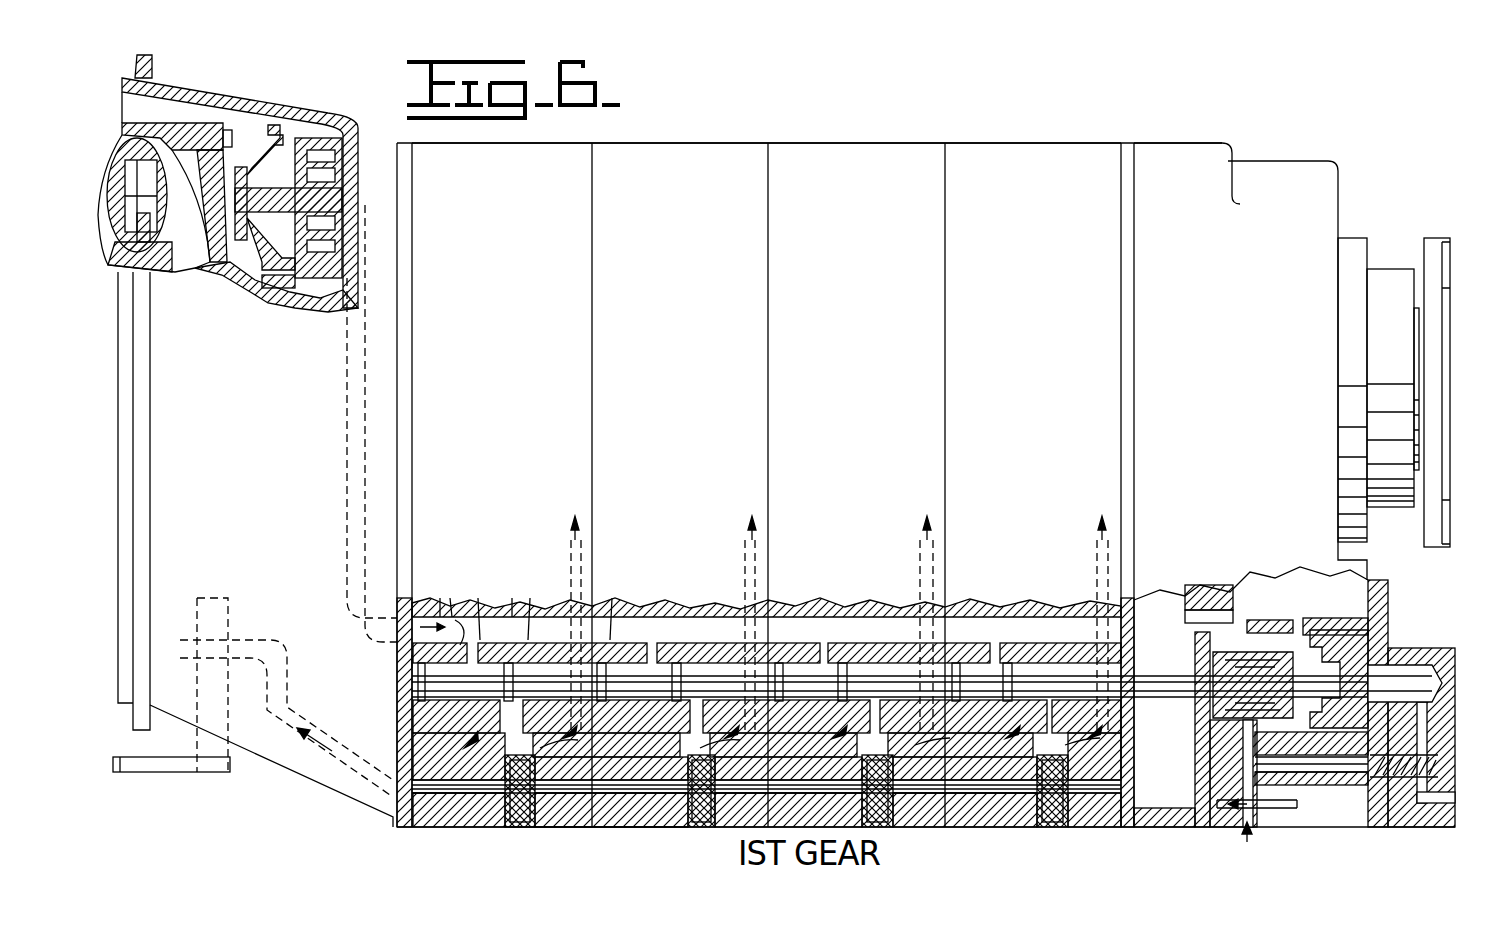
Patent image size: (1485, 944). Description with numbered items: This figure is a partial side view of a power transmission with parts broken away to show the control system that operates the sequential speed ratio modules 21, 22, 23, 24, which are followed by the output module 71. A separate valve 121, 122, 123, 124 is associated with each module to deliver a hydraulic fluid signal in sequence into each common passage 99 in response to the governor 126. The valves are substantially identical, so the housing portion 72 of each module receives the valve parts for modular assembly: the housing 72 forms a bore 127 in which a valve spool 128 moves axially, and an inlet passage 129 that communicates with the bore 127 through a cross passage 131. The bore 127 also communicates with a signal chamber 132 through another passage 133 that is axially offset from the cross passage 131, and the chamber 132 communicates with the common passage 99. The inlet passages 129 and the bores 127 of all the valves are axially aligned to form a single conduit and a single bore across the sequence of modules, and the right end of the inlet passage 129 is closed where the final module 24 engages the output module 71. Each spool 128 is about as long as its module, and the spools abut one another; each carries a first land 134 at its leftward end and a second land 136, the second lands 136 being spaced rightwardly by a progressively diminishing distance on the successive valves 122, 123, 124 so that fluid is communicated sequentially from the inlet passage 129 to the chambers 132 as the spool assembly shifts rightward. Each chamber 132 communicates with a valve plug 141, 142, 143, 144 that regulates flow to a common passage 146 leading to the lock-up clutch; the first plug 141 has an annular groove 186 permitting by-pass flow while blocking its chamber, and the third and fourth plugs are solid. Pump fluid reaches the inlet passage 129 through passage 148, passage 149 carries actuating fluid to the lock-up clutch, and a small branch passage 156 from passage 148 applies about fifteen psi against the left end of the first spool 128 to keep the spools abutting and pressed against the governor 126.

The speed ratio module 21 is at (508, 269).
The speed ratio module 22 is at (690, 269).
The speed ratio module 23 is at (862, 269).
The speed ratio module 24 is at (1038, 269).
The output module 71 is at (1228, 269).
The housing portion 72 is at (1088, 828).
The common passage 99 is at (1108, 550).
The valve 121 is at (459, 780).
The valve 122 is at (610, 780).
The valve 123 is at (786, 780).
The valve 124 is at (962, 780).
The governor 126 is at (1216, 814).
The bore 127 is at (512, 598).
The valve spool 128 is at (897, 592).
The inlet passage 129 is at (450, 598).
The cross passage 131 is at (998, 592).
The signal chamber 132 is at (1144, 736).
The passage 133 is at (1045, 592).
The first land 134 is at (412, 688).
The second land 136 is at (1018, 660).
The valve plug 141 is at (448, 830).
The valve plug 142 is at (700, 830).
The valve plug 143 is at (885, 830).
The valve plug 144 is at (1050, 830).
The common passage 146 is at (605, 830).
The passage 148 is at (347, 390).
The passage 149 is at (345, 762).
The branch passage 156 is at (400, 660).
The annular groove 186 is at (523, 830).